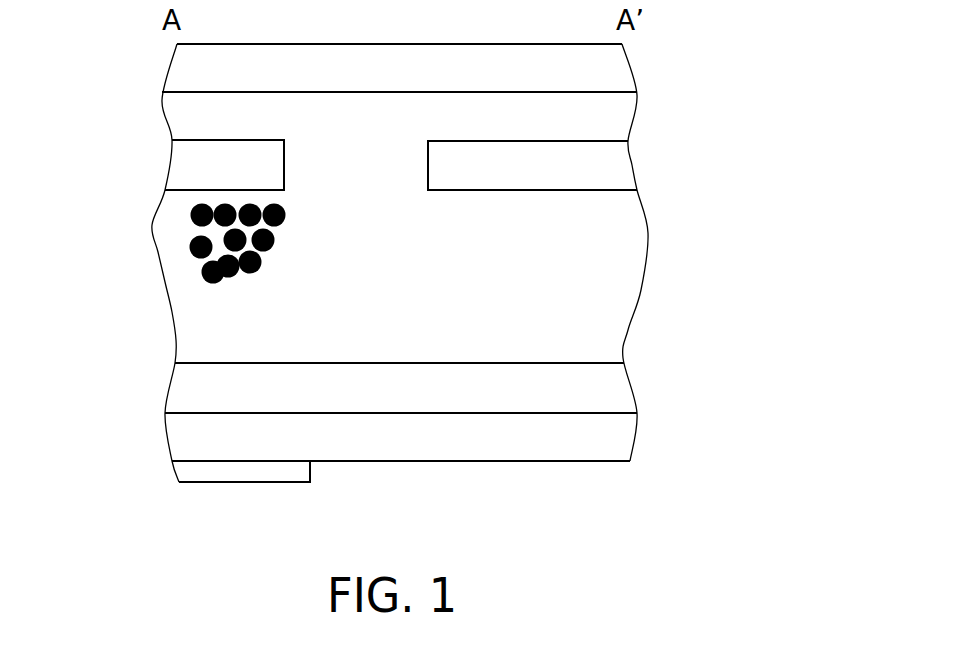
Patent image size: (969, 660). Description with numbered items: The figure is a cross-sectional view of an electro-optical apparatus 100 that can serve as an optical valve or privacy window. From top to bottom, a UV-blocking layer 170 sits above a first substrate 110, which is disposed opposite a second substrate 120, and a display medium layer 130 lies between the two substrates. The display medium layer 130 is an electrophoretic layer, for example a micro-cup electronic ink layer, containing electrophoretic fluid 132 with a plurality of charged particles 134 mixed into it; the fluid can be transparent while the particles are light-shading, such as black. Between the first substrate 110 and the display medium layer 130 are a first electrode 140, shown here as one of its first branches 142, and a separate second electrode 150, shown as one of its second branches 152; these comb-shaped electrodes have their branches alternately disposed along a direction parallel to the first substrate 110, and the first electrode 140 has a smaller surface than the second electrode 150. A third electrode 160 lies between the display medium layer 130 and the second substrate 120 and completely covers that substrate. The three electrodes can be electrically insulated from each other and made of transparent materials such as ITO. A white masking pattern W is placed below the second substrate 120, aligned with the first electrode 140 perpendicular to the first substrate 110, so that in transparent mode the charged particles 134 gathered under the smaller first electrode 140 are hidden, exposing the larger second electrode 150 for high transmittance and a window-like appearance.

The electro-optical apparatus 100 is at (677, 545).
The first substrate 110 is at (203, 115).
The second substrate 120 is at (197, 435).
The display medium layer 130 is at (80, 233).
The electrophoretic fluid 132 is at (205, 325).
The charged particles 134 is at (190, 222).
The first electrode 140 is at (197, 165).
The first branches 142 is at (224, 165).
The second electrode 150 is at (602, 167).
The second branches 152 is at (532, 165).
The third electrode 160 is at (200, 388).
The UV-blocking layer 170 is at (195, 63).
The white masking pattern W is at (197, 472).